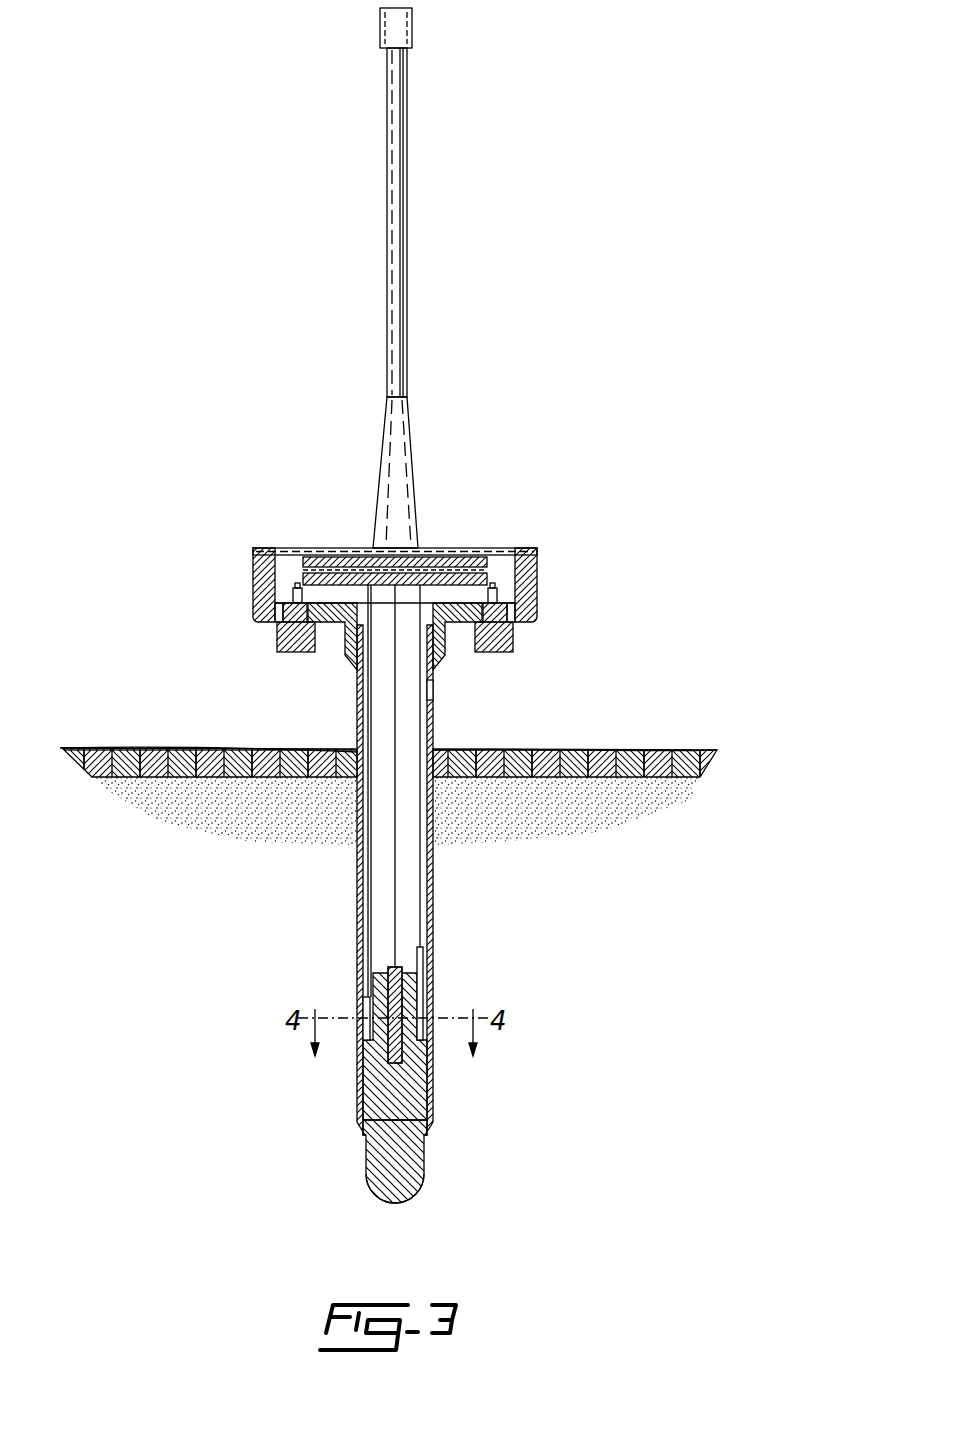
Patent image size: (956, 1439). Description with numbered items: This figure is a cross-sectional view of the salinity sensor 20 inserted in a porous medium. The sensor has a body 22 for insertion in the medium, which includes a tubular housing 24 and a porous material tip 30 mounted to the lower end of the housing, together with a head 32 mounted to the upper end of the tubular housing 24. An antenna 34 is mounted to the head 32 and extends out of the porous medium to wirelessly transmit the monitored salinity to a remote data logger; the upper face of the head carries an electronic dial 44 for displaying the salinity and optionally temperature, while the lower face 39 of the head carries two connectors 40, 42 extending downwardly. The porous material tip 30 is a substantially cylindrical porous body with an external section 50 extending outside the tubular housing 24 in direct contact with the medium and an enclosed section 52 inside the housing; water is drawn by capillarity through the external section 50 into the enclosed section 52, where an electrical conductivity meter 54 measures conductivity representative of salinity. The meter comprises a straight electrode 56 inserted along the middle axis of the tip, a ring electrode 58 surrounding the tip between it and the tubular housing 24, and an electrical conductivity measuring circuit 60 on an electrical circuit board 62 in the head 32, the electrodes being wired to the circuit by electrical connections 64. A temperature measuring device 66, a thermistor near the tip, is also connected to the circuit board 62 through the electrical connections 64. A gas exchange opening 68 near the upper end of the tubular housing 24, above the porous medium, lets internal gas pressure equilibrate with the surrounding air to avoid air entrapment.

The salinity sensor 20 is at (536, 383).
The body 22 is at (196, 668).
The tubular housing 24 is at (433, 858).
The porous material tip 30 is at (424, 1175).
The head 32 is at (253, 588).
The antenna 34 is at (387, 190).
The lower face 39 is at (533, 626).
The connector 40 is at (513, 634).
The connector 42 is at (277, 635).
The electronic dial 44 is at (437, 548).
The external section 50 is at (424, 1150).
The enclosed section 52 is at (425, 1073).
The electrical conductivity meter 54 is at (430, 1000).
The straight electrode 56 is at (393, 1050).
The ring electrode 58 is at (363, 1000).
The electrical conductivity measuring circuit 60 is at (338, 556).
The electrical circuit board 62 is at (322, 556).
The electrical connections 64 is at (458, 592).
The temperature measuring device 66 is at (432, 957).
The gas exchange opening 68 is at (433, 688).